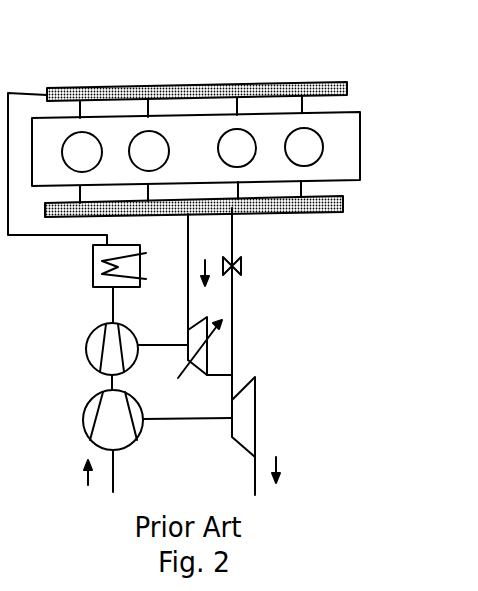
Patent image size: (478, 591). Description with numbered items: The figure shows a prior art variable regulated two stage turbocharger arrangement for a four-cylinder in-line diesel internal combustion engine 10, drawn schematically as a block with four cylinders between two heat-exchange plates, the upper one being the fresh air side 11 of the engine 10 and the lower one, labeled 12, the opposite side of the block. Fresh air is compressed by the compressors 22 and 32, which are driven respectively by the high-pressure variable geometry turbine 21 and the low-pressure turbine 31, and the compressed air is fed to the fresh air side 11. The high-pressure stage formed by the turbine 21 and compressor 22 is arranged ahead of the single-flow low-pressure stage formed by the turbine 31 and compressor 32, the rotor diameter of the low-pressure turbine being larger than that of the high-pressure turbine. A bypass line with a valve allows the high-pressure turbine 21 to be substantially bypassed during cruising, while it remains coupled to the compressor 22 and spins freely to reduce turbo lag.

The internal combustion engine 10 is at (204, 130).
The fresh air side 11 is at (110, 88).
The lower heat exchange plate 12 is at (302, 212).
The high-pressure variable geometry turbine 21 is at (197, 358).
The compressor 22 is at (88, 344).
The low-pressure turbine 31 is at (247, 420).
The compressor 32 is at (80, 417).